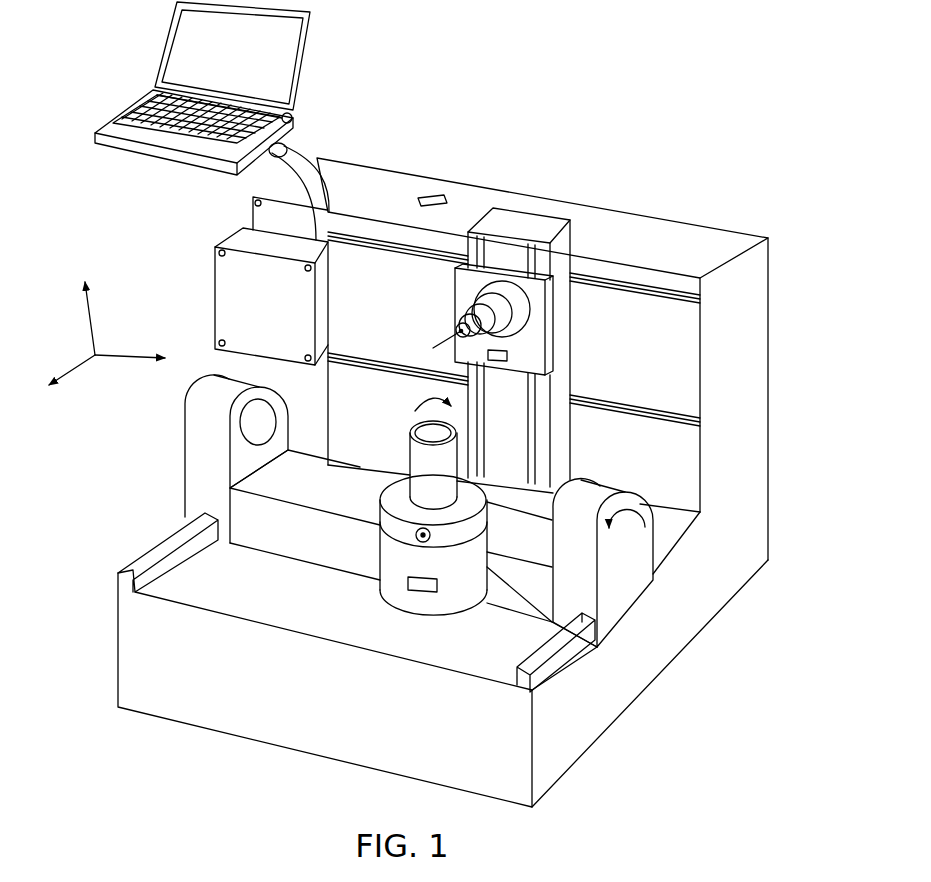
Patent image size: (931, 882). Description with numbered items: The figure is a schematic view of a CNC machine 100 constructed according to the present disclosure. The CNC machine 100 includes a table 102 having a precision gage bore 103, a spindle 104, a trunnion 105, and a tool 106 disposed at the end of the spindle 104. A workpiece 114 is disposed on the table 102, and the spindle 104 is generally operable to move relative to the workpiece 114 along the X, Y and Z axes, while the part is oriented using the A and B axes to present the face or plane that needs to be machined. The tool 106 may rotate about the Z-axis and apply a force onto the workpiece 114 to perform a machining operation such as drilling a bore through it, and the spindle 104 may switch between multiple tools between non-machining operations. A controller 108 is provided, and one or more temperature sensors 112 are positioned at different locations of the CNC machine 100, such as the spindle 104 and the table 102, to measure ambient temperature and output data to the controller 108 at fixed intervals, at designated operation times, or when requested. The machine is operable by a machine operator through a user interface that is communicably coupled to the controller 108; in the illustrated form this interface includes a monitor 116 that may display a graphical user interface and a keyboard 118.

The CNC machine 100 is at (702, 82).
The table 102 is at (487, 567).
The precision gage bore 103 is at (415, 535).
The spindle 104 is at (478, 320).
The trunnion 105 is at (622, 583).
The tool 106 is at (445, 337).
The controller 108 is at (243, 243).
The temperature sensors 112 is at (437, 192).
The workpiece 114 is at (423, 463).
The monitor 116 is at (232, 56).
The keyboard 118 is at (130, 108).